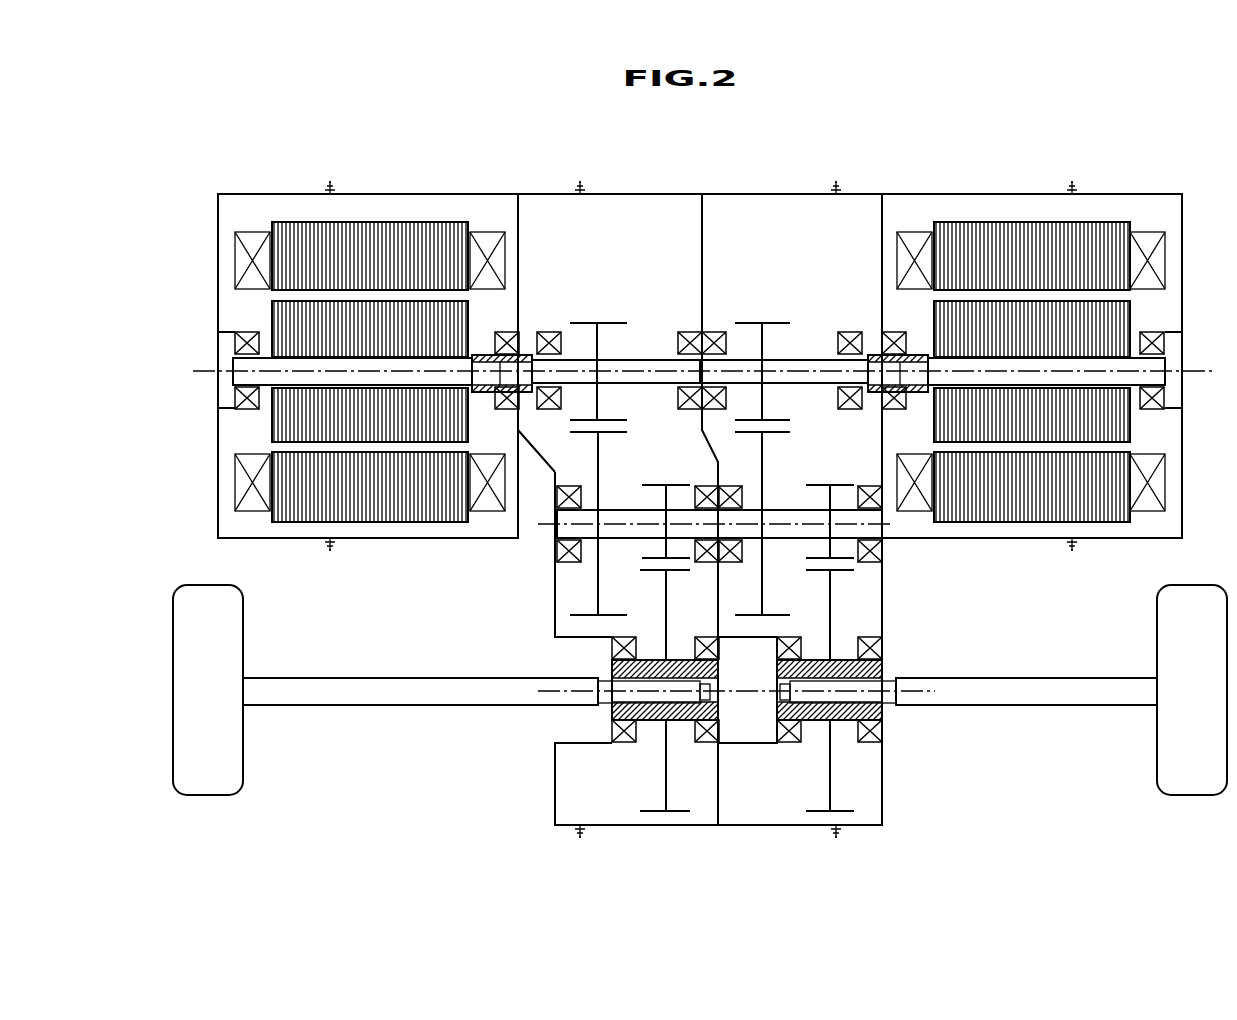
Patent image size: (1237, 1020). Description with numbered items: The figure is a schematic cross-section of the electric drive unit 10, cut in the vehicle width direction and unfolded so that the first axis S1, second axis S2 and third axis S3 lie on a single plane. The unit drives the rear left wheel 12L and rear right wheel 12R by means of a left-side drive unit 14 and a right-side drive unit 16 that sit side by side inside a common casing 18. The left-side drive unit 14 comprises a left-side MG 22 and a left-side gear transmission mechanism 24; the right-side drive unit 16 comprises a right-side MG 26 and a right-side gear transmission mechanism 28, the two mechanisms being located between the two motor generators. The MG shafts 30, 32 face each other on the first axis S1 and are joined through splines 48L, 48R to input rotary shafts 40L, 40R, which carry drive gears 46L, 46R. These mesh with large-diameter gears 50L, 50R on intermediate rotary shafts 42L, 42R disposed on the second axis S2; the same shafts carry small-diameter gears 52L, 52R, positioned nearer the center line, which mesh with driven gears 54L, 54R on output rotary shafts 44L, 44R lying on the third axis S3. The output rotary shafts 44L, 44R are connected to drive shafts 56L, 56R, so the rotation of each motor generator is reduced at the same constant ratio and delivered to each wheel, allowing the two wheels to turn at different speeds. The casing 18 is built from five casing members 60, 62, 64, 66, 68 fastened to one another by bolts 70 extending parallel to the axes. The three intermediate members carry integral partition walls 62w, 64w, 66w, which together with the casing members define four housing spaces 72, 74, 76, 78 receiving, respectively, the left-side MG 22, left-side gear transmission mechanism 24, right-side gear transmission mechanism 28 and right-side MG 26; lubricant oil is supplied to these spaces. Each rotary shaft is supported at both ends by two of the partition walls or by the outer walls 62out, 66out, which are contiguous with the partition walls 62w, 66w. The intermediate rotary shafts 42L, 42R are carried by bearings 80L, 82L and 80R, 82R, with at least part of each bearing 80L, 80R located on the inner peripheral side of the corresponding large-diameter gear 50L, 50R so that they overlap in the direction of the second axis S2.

The electric drive unit 10 is at (1152, 144).
The rear left wheel 12L is at (208, 782).
The rear right wheel 12R is at (1205, 782).
The left-side drive unit 14 is at (370, 313).
The right-side drive unit 16 is at (1031, 309).
The casing 18 is at (215, 188).
The left-side MG 22 is at (384, 208).
The left-side gear transmission mechanism 24 is at (638, 244).
The right-side MG 26 is at (1010, 208).
The right-side gear transmission mechanism 28 is at (784, 242).
The MG shaft 30 is at (262, 392).
The MG shaft 32 is at (1135, 392).
The input rotary shaft 40L is at (655, 360).
The input rotary shaft 40R is at (813, 360).
The intermediate rotary shaft 42L is at (621, 512).
The intermediate rotary shaft 42R is at (786, 512).
The output rotary shaft 44L is at (650, 722).
The output rotary shaft 44R is at (805, 722).
The drive gear 46L is at (599, 322).
The drive gear 46R is at (764, 322).
The splines 48L is at (528, 362).
The splines 48R is at (874, 362).
The large-diameter gear 50L is at (626, 616).
The large-diameter gear 50R is at (790, 616).
The small-diameter gear 52L is at (667, 484).
The small-diameter gear 52R is at (832, 484).
The driven gear 54L is at (670, 813).
The driven gear 54R is at (830, 813).
The drive shaft 56L is at (391, 694).
The drive shaft 56R is at (1030, 694).
The casing member 60 is at (218, 258).
The casing member 62 is at (468, 192).
The partition wall 62w is at (520, 282).
The outer wall 62out is at (556, 608).
The casing member 64 is at (690, 172).
The partition wall 64w is at (700, 262).
The casing member 66 is at (918, 192).
The partition wall 66w is at (880, 262).
The outer wall 66out is at (884, 608).
The casing member 68 is at (1182, 258).
The bolt 70 is at (333, 182).
The housing space 72 is at (233, 222).
The housing space 74 is at (531, 222).
The housing space 76 is at (715, 222).
The housing space 78 is at (893, 222).
The bearing 80L is at (568, 488).
The bearing 80R is at (733, 488).
The bearing 82L is at (707, 565).
The bearing 82R is at (884, 562).
The first axis S1 is at (688, 370).
The second axis S2 is at (698, 523).
The third axis S3 is at (720, 690).